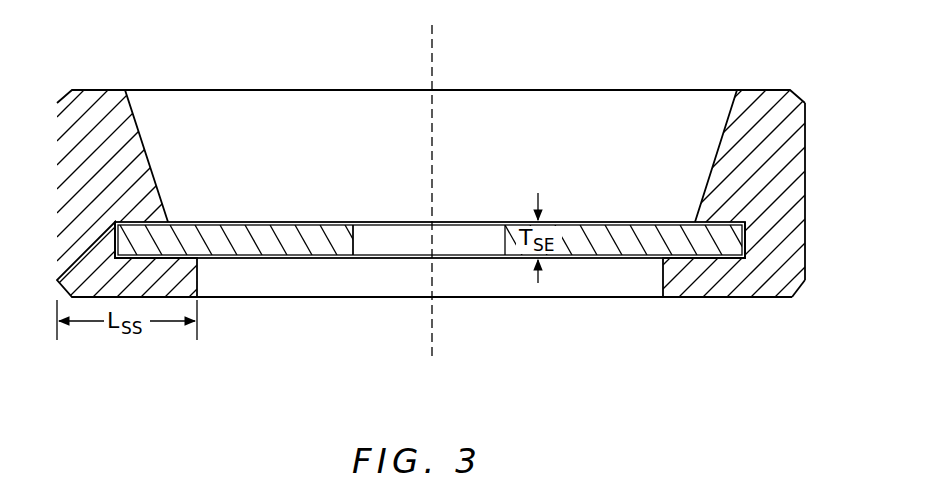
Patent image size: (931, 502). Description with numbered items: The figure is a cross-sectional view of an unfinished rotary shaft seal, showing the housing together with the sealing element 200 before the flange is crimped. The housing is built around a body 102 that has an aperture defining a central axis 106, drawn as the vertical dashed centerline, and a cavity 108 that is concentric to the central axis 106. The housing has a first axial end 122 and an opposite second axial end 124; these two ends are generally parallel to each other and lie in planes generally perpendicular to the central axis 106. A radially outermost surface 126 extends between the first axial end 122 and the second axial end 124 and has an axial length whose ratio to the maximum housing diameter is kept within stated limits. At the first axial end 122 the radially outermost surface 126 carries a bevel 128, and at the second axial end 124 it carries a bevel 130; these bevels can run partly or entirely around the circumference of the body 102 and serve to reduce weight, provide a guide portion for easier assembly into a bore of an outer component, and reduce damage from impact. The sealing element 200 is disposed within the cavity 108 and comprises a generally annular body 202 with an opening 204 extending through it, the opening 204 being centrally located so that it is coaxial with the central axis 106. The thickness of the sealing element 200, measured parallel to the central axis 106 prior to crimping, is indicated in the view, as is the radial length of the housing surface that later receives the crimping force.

The body 102 is at (193, 90).
The central axis 106 is at (433, 332).
The cavity 108 is at (710, 238).
The first axial end 122 is at (772, 90).
The second axial end 124 is at (688, 298).
The radially outermost surface 126 is at (805, 160).
The bevel 128 is at (800, 93).
The bevel 130 is at (796, 298).
The sealing element 200 is at (585, 262).
The body 202 is at (260, 258).
The opening 204 is at (373, 232).